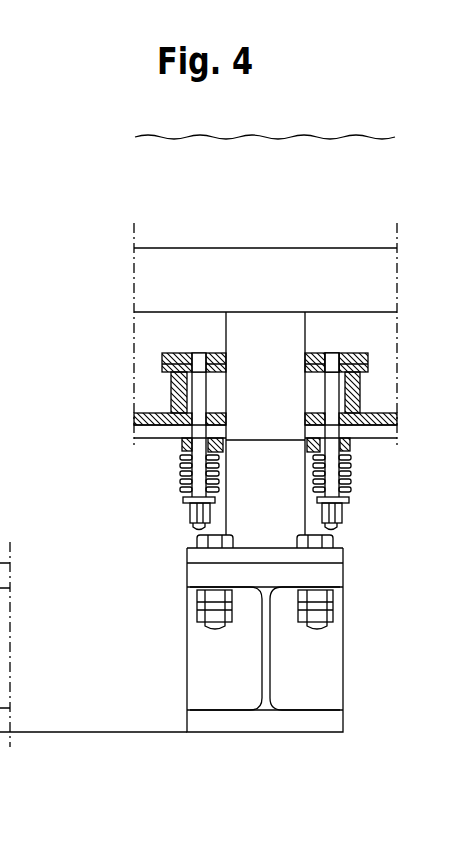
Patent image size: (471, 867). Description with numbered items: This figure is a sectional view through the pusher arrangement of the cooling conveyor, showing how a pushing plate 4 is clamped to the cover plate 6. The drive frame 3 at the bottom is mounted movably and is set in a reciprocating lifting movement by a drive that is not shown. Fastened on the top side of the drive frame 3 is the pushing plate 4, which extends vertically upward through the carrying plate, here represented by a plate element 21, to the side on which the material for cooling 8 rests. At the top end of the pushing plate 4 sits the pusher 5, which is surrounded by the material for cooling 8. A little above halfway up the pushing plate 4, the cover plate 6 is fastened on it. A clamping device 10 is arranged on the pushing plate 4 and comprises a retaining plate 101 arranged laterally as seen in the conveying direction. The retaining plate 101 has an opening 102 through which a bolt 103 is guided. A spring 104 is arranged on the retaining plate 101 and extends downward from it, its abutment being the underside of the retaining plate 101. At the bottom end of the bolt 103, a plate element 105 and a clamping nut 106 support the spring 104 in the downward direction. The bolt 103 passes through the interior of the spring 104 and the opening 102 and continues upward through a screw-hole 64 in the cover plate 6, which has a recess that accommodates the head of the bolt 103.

The drive frame 3 is at (265, 658).
The pushing plate 4 is at (283, 332).
The pusher 5 is at (191, 267).
The cover plate 6 is at (368, 357).
The material for cooling 8 is at (330, 180).
The clamping device 10 is at (355, 485).
The plate element 21 is at (372, 428).
The screw-hole 64 is at (172, 362).
The retaining plate 101 is at (183, 441).
The opening 102 is at (185, 447).
The bolt 103 is at (200, 390).
The spring 104 is at (183, 473).
The plate element 105 is at (185, 499).
The clamping nut 106 is at (185, 518).